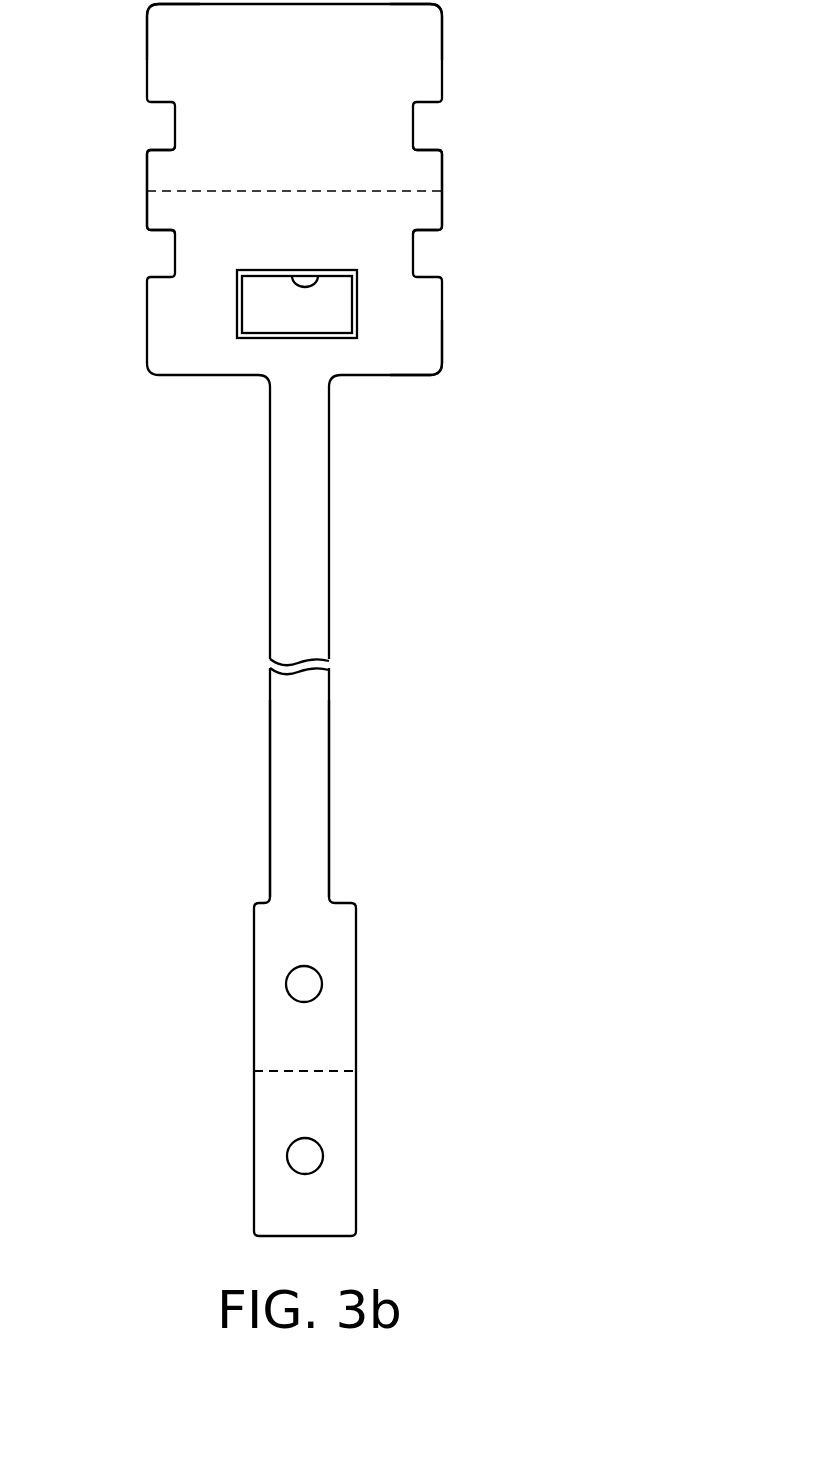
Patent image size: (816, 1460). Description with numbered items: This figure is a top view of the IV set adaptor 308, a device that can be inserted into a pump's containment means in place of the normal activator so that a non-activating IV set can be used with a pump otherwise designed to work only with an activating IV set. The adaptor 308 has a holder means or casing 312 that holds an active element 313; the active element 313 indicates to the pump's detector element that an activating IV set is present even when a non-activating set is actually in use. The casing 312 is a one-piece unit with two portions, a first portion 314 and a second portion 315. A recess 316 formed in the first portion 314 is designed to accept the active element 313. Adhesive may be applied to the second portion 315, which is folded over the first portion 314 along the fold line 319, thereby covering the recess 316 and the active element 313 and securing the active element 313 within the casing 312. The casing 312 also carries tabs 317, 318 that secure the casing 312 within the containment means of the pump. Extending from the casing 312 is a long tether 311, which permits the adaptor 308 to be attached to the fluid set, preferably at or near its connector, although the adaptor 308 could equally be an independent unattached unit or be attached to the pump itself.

The IV set adaptor 308 is at (129, 632).
The tether 311 is at (315, 875).
The casing 312 is at (148, 68).
The active element 313 is at (260, 320).
The first portion 314 is at (420, 323).
The second portion 315 is at (417, 50).
The recess 316 is at (317, 282).
The tab 317 is at (158, 177).
The tab 318 is at (427, 173).
The fold line 319 is at (190, 192).